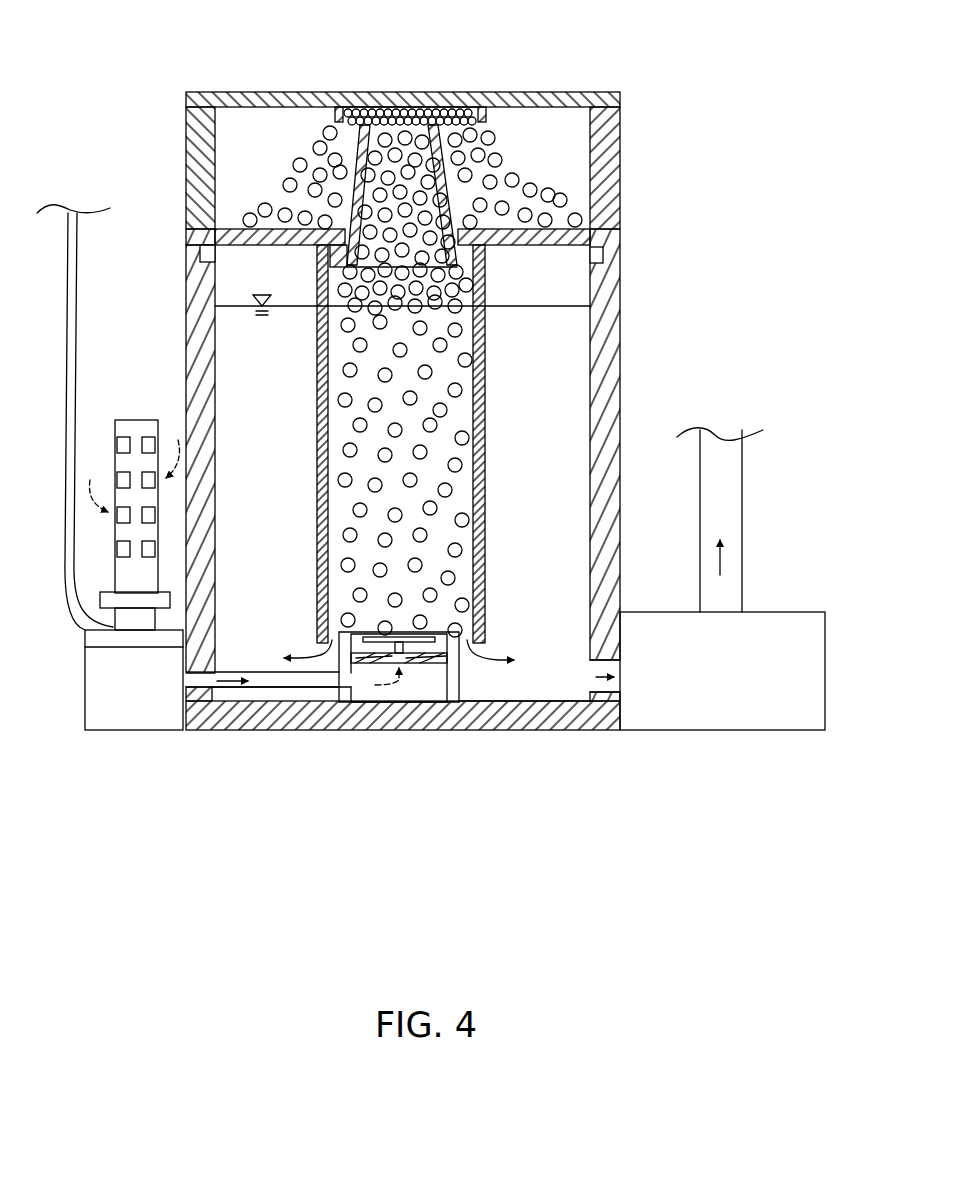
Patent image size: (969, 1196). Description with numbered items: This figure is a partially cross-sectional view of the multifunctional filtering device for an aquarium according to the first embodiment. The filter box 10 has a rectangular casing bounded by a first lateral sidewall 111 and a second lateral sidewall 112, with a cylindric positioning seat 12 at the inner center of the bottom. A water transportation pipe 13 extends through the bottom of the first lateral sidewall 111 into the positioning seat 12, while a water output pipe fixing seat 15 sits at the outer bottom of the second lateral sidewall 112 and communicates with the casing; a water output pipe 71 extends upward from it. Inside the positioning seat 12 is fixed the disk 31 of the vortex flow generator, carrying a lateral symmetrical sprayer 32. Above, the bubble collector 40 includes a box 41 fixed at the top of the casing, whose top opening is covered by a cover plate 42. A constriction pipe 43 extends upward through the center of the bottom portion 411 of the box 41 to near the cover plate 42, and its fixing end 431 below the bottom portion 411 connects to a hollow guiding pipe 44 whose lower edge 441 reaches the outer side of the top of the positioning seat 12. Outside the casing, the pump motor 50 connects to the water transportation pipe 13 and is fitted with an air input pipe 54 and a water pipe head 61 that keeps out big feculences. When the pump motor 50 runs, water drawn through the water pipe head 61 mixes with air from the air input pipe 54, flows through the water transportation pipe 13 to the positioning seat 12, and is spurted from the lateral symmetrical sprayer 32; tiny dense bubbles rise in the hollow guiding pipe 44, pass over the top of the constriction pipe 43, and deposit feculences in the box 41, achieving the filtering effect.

The filter box 10 is at (240, 776).
The first lateral sidewall 111 is at (196, 318).
The second lateral sidewall 112 is at (611, 405).
The positioning seat 12 is at (456, 682).
The water transportation pipe 13 is at (287, 686).
The water output pipe fixing seat 15 is at (745, 770).
The disk 31 is at (362, 645).
The lateral symmetrical sprayer 32 is at (440, 651).
The bubble collector 40 is at (150, 96).
The box 41 is at (620, 133).
The bottom portion 411 is at (562, 229).
The cover plate 42 is at (446, 92).
The constriction pipe 43 is at (458, 186).
The fixing end 431 is at (486, 267).
The hollow guiding pipe 44 is at (468, 368).
The lower edge 441 is at (468, 608).
The pump motor 50 is at (90, 688).
The air input pipe 54 is at (76, 285).
The water pipe head 61 is at (140, 421).
The water output pipe 71 is at (735, 467).